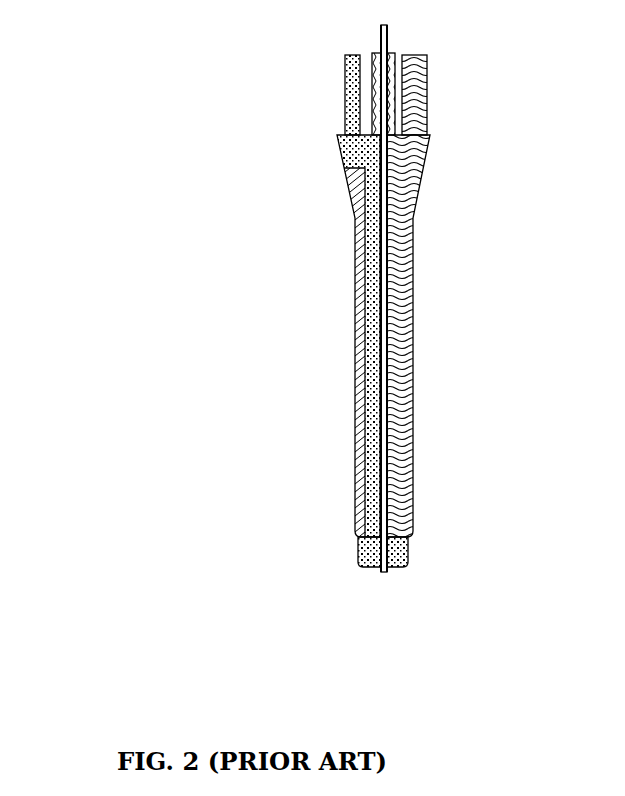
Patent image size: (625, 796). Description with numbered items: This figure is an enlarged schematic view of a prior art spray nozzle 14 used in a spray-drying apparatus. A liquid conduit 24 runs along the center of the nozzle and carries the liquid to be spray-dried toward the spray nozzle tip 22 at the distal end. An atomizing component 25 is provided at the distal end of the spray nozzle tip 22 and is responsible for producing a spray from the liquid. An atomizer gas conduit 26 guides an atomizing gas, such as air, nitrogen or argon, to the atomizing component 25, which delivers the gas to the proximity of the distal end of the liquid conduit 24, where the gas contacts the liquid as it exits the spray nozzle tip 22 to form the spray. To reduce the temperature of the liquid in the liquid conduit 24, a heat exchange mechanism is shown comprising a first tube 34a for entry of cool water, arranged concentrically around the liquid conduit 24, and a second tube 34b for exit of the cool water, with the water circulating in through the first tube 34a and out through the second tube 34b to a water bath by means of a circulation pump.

The spray nozzle 14 is at (270, 379).
The spray nozzle tip 22 is at (362, 580).
The liquid conduit 24 is at (378, 198).
The atomizing component 25 is at (348, 555).
The atomizer gas conduit 26 is at (337, 67).
The first tube 34a is at (370, 107).
The second tube 34b is at (436, 107).